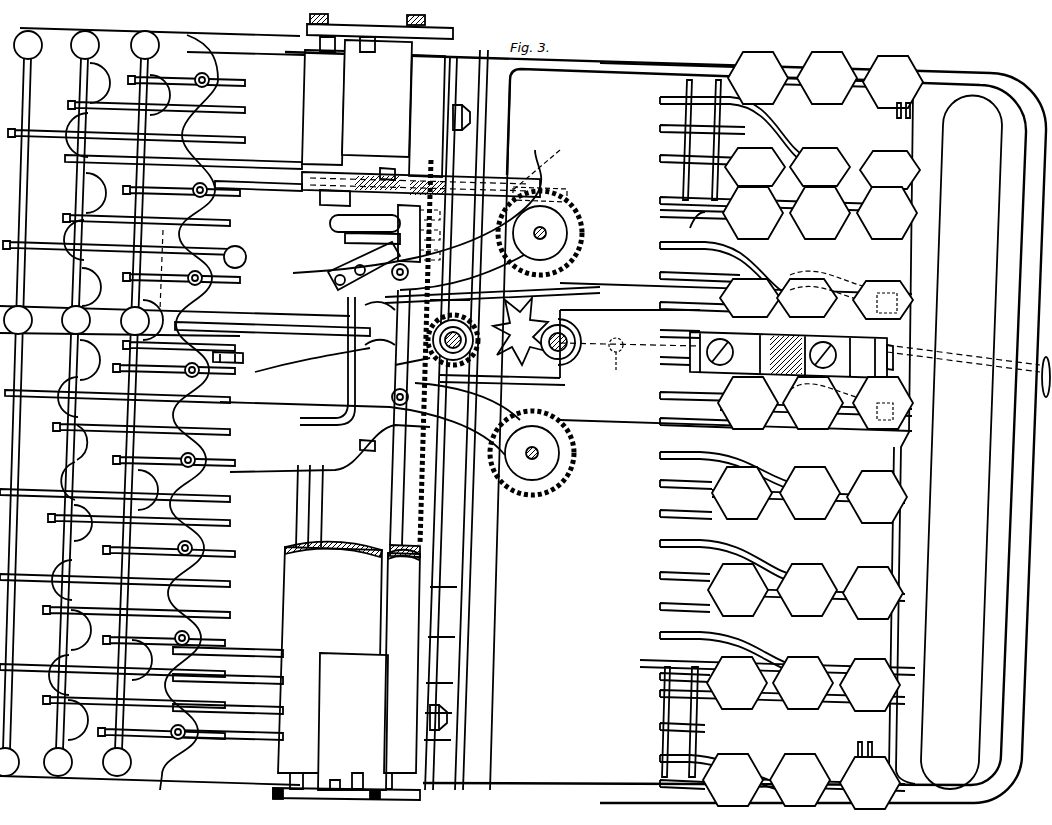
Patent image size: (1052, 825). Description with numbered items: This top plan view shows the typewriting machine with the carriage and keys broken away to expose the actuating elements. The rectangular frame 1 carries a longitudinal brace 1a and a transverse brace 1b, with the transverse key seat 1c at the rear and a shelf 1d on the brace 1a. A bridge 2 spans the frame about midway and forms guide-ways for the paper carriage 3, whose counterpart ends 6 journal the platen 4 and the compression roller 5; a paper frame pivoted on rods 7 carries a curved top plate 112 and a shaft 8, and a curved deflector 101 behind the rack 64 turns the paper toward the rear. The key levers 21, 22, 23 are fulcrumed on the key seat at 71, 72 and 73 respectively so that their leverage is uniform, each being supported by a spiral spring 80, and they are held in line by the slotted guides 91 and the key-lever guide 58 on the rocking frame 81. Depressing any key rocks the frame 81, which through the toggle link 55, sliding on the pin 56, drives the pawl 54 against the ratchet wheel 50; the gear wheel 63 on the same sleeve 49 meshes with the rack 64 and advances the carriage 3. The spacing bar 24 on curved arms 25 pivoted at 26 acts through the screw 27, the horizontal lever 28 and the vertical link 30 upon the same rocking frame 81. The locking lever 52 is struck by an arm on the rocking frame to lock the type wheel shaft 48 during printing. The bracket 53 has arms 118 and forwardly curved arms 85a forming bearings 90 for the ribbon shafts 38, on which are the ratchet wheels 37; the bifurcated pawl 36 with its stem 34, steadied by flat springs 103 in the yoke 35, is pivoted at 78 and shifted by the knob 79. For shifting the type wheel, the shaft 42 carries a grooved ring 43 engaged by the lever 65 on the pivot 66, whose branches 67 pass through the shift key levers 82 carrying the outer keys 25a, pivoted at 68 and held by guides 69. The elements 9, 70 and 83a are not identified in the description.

The frame 1 is at (602, 72).
The longitudinal brace 1a is at (606, 283).
The transverse brace 1b is at (500, 146).
The transverse key seat 1c is at (68, 258).
The shelf 1d is at (340, 440).
The bridge 2 is at (312, 478).
The paper carriage 3 is at (402, 621).
The platen 4 is at (335, 419).
The compression roller 5 is at (414, 414).
The carriage ends 6 is at (453, 32).
The rods 7 is at (368, 44).
The shaft 8 is at (385, 42).
The spring 9 is at (312, 360).
The key levers 21 is at (742, 493).
The intermediate key levers 22 is at (810, 493).
The longest key levers 23 is at (877, 497).
The spacing bar 24 is at (961, 442).
The curved arms 25 is at (600, 232).
The outer keys 25a is at (813, 430).
The pivot 26 is at (620, 677).
The screw 27 is at (540, 188).
The horizontal lever 28 is at (543, 159).
The vertical link 30 is at (320, 192).
The pawl stem 34 is at (268, 330).
The yoke 35 is at (335, 392).
The bifurcated pawl 36 is at (575, 291).
The ratchet wheels 37 is at (552, 255).
The ribbon shafts 38 is at (546, 230).
The shaft 42 is at (575, 334).
The ring 43 is at (555, 336).
The type wheel shaft 48 is at (462, 350).
The sleeve 49 is at (462, 335).
The ratchet wheel 50 is at (521, 331).
The lever 52 is at (238, 365).
The bracket 53 is at (458, 321).
The driving pawl 54 is at (247, 260).
The toggle link 55 is at (328, 275).
The pin 56 is at (372, 240).
The key-lever guide 58 is at (387, 168).
The gear wheel 63 is at (405, 363).
The rack 64 is at (400, 488).
The lever 65 is at (800, 343).
The pivot 66 is at (795, 287).
The branches 67 is at (883, 355).
The pivot 68 is at (791, 355).
The guides 69 is at (896, 113).
The pawl 70 is at (419, 300).
The fulcrum 71 is at (142, 404).
The fulcrum 72 is at (79, 404).
The fulcrum 73 is at (17, 404).
The pivot 78 is at (629, 366).
The knob 79 is at (1040, 380).
The spiral spring 80 is at (212, 85).
The rocking frame 81 is at (255, 180).
The levers 82 is at (910, 272).
The bar 83a is at (690, 140).
The arms 85a is at (417, 302).
The bearings 90 is at (570, 236).
The slotted guides 91 is at (466, 118).
The curved deflector 101 is at (392, 548).
The flat springs 103 is at (379, 323).
The curved top plate 112 is at (365, 415).
The arms 118 is at (414, 336).